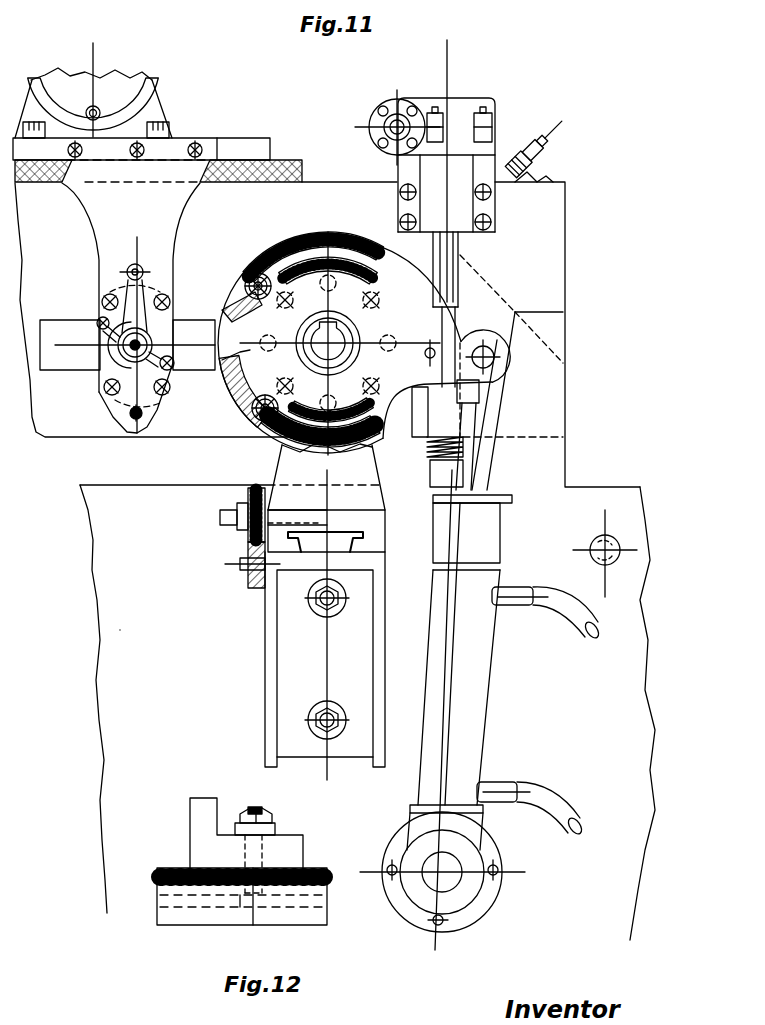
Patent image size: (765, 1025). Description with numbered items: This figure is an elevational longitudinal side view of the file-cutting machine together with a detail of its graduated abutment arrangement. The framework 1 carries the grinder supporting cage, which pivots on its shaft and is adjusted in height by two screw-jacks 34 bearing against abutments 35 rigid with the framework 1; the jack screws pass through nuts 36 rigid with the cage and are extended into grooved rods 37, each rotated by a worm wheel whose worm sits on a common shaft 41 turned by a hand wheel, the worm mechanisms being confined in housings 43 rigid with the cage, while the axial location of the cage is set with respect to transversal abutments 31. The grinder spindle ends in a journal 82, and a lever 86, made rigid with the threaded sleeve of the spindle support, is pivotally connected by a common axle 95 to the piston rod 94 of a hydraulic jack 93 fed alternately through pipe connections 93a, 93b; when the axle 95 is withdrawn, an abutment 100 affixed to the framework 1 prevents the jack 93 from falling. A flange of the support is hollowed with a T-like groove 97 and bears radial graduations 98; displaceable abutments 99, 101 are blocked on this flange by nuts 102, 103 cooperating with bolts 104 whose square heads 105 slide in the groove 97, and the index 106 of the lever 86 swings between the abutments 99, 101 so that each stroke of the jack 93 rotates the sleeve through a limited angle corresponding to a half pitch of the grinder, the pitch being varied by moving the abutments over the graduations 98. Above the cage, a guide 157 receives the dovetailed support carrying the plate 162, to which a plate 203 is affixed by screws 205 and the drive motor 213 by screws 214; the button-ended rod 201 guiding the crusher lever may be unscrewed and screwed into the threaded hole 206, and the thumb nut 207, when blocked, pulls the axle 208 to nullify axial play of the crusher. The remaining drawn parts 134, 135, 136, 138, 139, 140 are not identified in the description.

In FIG. 11, the framework 1 is at (135, 617).
In FIG. 11, the transversal abutments 31 is at (548, 451).
In FIG. 11, the screw-jacks 34 is at (462, 445).
In FIG. 11, the abutments 35 is at (424, 482).
In FIG. 11, the nuts 36 is at (452, 417).
In FIG. 11, the grooved rods 37 is at (450, 280).
In FIG. 11, the common shaft 41 is at (390, 102).
In FIG. 11, the housings 43 is at (467, 105).
In FIG. 11, the journal 82 is at (335, 335).
In FIG. 11, the lever 86 is at (450, 337).
In FIG. 12, the lever 86 is at (175, 918).
In FIG. 11, the jack 93 is at (473, 583).
In FIG. 11, the pipe connection 93a is at (520, 600).
In FIG. 11, the pipe connection 93b is at (520, 782).
In FIG. 11, the piston rod 94 is at (475, 485).
In FIG. 11, the common axle 95 is at (480, 355).
In FIG. 11, the T-like groove 97 is at (355, 258).
In FIG. 11, the radial graduations 98 is at (320, 232).
In FIG. 12, the radial graduations 98 is at (180, 865).
In FIG. 11, the displaceable abutment 99 is at (233, 300).
In FIG. 12, the displaceable abutment 99 is at (203, 812).
In FIG. 11, the abutment 100 is at (612, 540).
In FIG. 11, the displaceable abutment 101 is at (246, 389).
In FIG. 11, the nut 102 is at (262, 265).
In FIG. 12, the nut 102 is at (262, 828).
In FIG. 11, the nut 103 is at (260, 417).
In FIG. 11, the bolts 104 is at (267, 262).
In FIG. 12, the bolts 104 is at (258, 848).
In FIG. 12, the square heads 105 is at (237, 905).
In FIG. 11, the index 106 is at (218, 366).
In FIG. 11, the shaft 134 is at (220, 520).
In FIG. 11, the pinion 135 is at (248, 530).
In FIG. 11, the nut 136 is at (240, 562).
In FIG. 11, the bracket 138 is at (300, 642).
In FIG. 11, the housing 139 is at (357, 498).
In FIG. 11, the T-slot 140 is at (360, 545).
In FIG. 11, the guide 157 is at (287, 158).
In FIG. 11, the plate 162 is at (242, 153).
In FIG. 11, the button-ended rod 201 is at (143, 270).
In FIG. 11, the plate 203 is at (131, 308).
In FIG. 11, the screws 205 is at (103, 296).
In FIG. 11, the threaded hole 206 is at (132, 416).
In FIG. 11, the thumb nut 207 is at (100, 325).
In FIG. 11, the axle 208 is at (118, 356).
In FIG. 11, the drive motor 213 is at (125, 95).
In FIG. 11, the screws 214 is at (165, 118).